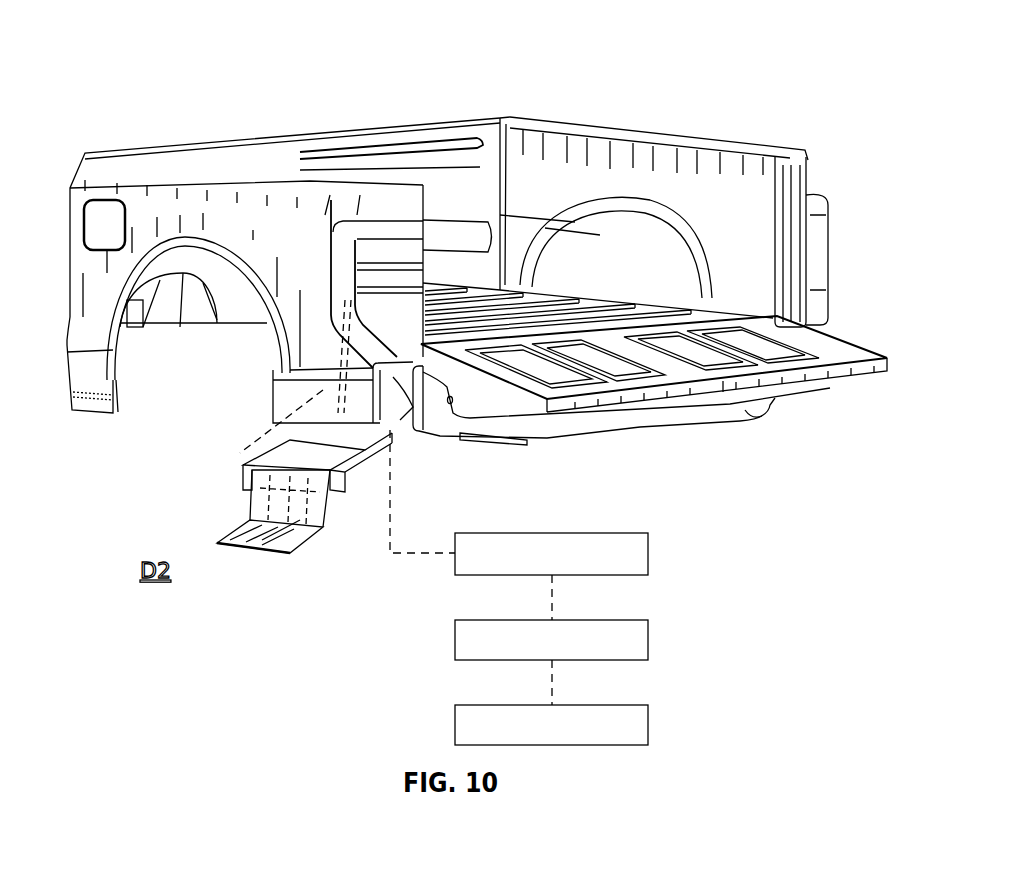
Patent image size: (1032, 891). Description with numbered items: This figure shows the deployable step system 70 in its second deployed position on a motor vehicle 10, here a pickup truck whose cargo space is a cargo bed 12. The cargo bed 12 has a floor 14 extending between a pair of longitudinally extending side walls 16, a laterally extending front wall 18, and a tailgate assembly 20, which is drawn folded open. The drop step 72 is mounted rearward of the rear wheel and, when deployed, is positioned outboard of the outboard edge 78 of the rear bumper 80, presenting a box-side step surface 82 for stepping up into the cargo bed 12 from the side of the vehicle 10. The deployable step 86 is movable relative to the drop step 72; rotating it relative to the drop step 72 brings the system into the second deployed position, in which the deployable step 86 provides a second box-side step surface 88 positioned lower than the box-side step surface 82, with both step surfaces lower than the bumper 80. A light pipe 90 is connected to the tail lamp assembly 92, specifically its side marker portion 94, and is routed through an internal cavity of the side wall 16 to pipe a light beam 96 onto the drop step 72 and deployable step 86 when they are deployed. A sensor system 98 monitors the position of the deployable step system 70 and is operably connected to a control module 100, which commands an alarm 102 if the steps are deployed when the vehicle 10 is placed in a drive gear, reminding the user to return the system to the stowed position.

The motor vehicle 10 is at (652, 68).
The cargo bed 12 is at (626, 196).
The floor 14 is at (494, 282).
The side walls 16 is at (227, 216).
The front wall 18 is at (340, 152).
The tailgate assembly 20 is at (829, 378).
The deployable step system 70 is at (232, 452).
The drop step 72 is at (363, 471).
The outboard edge 78 is at (393, 407).
The rear bumper 80 is at (469, 413).
The box-side step surface 82 is at (335, 488).
The deployable step 86 is at (303, 515).
The second box-side step surface 88 is at (243, 543).
The light pipe 90 is at (337, 300).
The tail lamp assembly 92 is at (395, 233).
The side marker portion 94 is at (343, 238).
The light beam 96 is at (243, 470).
The sensor system 98 is at (515, 533).
The control module 100 is at (517, 620).
The alarm 102 is at (517, 705).